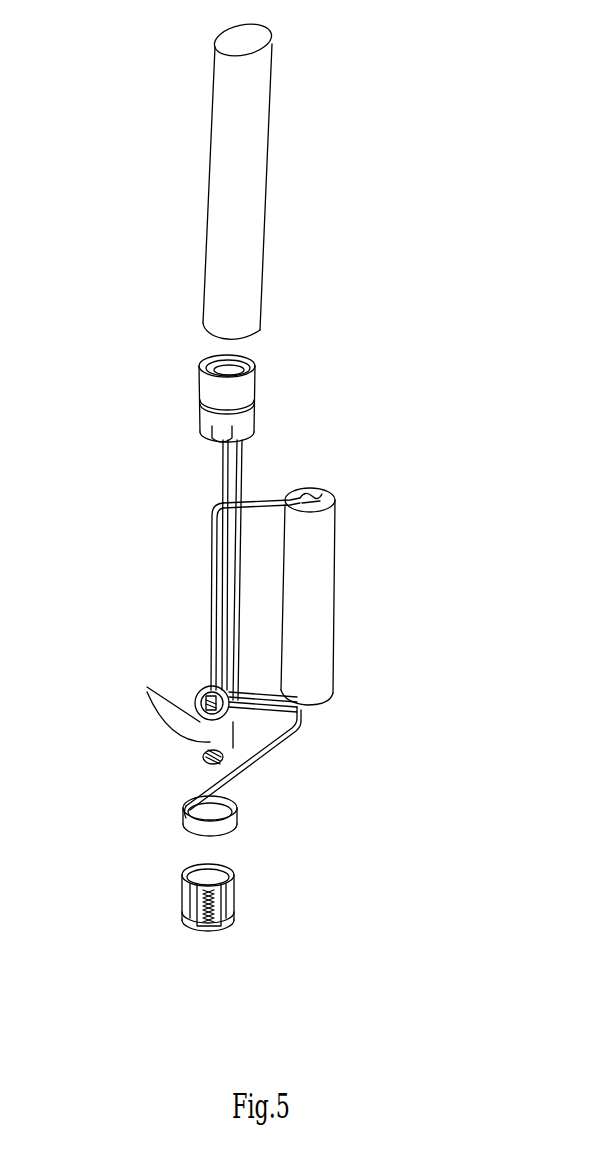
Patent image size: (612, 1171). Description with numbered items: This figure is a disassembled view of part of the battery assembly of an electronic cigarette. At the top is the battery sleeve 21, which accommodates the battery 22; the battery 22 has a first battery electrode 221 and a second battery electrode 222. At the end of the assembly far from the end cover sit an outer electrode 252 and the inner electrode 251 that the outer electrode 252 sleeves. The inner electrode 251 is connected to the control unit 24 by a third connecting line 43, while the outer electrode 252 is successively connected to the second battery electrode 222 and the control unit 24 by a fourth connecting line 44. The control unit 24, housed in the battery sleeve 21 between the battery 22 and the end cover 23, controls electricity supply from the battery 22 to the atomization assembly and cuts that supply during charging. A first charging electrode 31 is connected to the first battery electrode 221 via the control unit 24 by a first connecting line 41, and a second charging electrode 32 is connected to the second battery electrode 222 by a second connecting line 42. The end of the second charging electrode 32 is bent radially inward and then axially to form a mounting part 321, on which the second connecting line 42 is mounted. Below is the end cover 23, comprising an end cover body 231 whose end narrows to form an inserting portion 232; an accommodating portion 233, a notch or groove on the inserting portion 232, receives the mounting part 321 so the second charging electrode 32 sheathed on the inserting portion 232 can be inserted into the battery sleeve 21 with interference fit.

The battery sleeve 21 is at (240, 203).
The battery 22 is at (318, 589).
The first battery electrode 221 is at (335, 497).
The second battery electrode 222 is at (298, 702).
The end cover 23 is at (345, 862).
The end cover body 231 is at (235, 918).
The inserting portion 232 is at (237, 885).
The accommodating portion 233 is at (192, 923).
The control unit 24 is at (197, 690).
The inner electrode 251 is at (222, 436).
The outer electrode 252 is at (200, 388).
The first charging electrode 31 is at (203, 757).
The second charging electrode 32 is at (185, 832).
The mounting part 321 is at (185, 810).
The first connecting line 41 is at (157, 702).
The second connecting line 42 is at (255, 745).
The third connecting line 43 is at (220, 488).
The fourth connecting line 44 is at (245, 462).